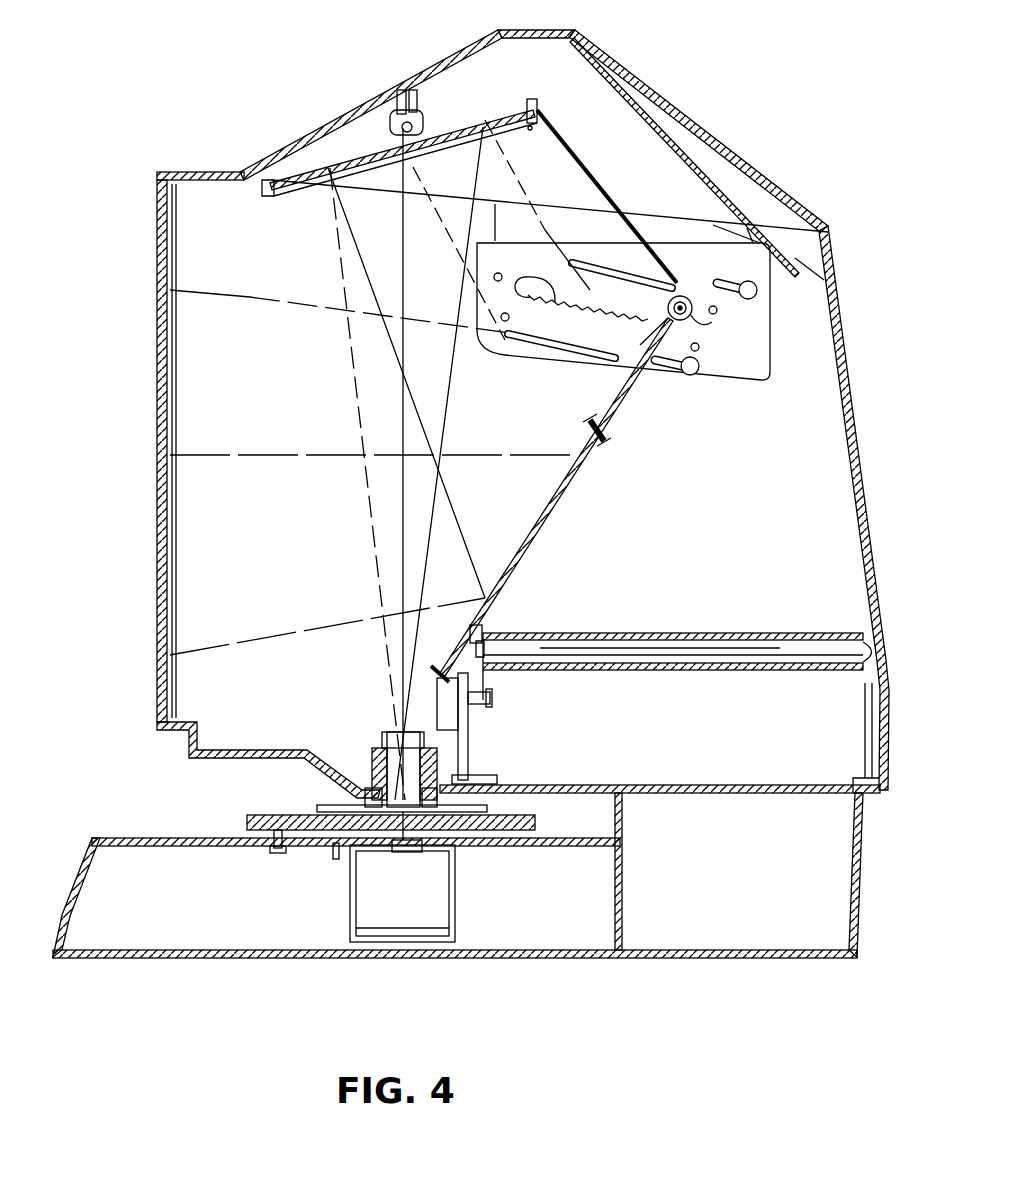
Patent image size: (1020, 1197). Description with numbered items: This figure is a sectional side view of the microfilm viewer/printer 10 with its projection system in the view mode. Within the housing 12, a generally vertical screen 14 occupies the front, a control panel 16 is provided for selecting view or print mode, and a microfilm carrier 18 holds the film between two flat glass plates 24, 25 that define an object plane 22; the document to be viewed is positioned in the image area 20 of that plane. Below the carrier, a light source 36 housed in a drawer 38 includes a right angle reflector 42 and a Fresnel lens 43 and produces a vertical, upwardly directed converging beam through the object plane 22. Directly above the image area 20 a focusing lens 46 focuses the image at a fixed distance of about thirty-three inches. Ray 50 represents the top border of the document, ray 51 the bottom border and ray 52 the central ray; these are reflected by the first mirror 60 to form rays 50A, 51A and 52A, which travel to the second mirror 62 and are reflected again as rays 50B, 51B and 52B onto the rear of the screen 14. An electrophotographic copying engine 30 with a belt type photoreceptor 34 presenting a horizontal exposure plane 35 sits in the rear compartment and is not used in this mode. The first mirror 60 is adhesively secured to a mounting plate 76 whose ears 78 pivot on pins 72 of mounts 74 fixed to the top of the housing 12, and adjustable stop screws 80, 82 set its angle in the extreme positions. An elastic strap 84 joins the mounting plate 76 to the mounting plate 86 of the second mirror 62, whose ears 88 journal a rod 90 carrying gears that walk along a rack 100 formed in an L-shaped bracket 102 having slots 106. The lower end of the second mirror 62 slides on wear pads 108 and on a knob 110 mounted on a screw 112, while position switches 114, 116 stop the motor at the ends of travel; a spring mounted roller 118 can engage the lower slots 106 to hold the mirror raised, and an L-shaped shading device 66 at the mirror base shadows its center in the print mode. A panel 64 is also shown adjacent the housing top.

The viewer/printer 10 is at (724, 100).
The housing 12 is at (858, 470).
The screen 14 is at (157, 350).
The control panel 16 is at (76, 887).
The microfilm carrier 18 is at (247, 822).
The image area 20 is at (398, 792).
The object plane 22 is at (320, 807).
The glass plate 24 is at (327, 800).
The glass plate 25 is at (332, 843).
The electrophotographic copying engine 30 is at (804, 610).
The belt type photoreceptor 34 is at (674, 624).
The exposure plane 35 is at (613, 633).
The light source 36 is at (462, 889).
The drawer 38 is at (410, 893).
The right angle reflector 42 is at (440, 920).
The Fresnel lens 43 is at (420, 850).
The focusing lens 46 is at (377, 752).
The ray 50 is at (452, 414).
The ray 50A is at (507, 160).
The ray 50B is at (257, 297).
The ray 51 is at (356, 397).
The ray 51A is at (357, 255).
The ray 51B is at (342, 623).
The central ray 52 is at (405, 292).
The ray 52A is at (427, 188).
The ray 52B is at (307, 452).
The first mirror 60 is at (305, 186).
The second mirror 62 is at (556, 497).
The panel 64 is at (677, 153).
The L-shaped shading device 66 is at (437, 679).
The pins 72 is at (413, 124).
The mounts 74 is at (405, 97).
The mounting plate 76 is at (487, 108).
The ears 78 is at (393, 122).
The adjustable stop screw 80 is at (530, 104).
The adjustable stop screw 82 is at (268, 187).
The elastic strap 84 is at (579, 160).
The mounting plate 86 is at (552, 498).
The ears 88 is at (683, 297).
The rod 90 is at (652, 320).
The rack 100 is at (557, 283).
The L-shaped bracket 102 is at (629, 335).
The slots 106 is at (714, 286).
The wear pads 108 is at (481, 633).
The knob 110 is at (468, 747).
The screw 112 is at (491, 698).
The position switch 114 is at (694, 324).
The position switch 116 is at (518, 297).
The spring mounted roller 118 is at (607, 437).